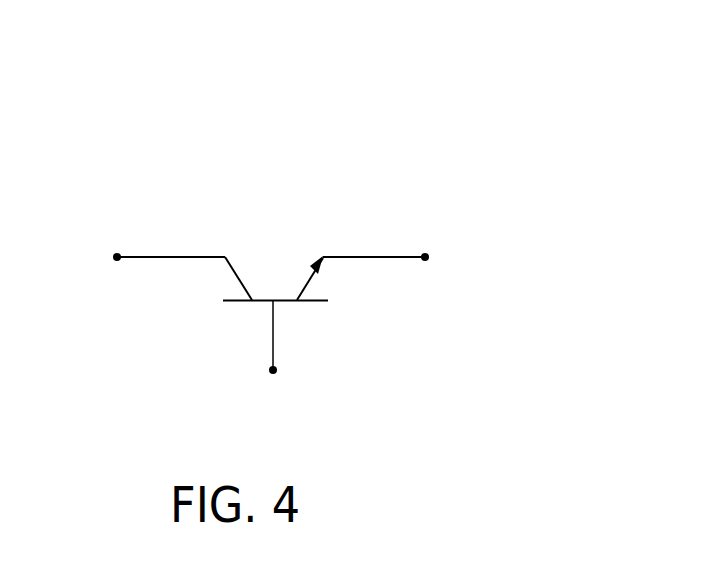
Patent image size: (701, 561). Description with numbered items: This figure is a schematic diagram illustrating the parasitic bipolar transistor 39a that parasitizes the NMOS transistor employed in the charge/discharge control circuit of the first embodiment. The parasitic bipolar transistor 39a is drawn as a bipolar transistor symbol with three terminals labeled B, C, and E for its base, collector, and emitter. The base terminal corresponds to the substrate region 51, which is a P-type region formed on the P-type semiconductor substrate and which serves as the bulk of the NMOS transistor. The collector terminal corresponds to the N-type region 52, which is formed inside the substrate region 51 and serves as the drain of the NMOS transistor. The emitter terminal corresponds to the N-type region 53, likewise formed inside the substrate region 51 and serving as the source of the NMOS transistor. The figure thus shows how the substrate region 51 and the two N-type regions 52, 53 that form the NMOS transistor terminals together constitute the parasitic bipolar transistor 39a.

The parasitic bipolar transistor 39a is at (539, 152).
The substrate region 51 is at (278, 371).
The N-type region 52 is at (113, 252).
The N-type region 53 is at (428, 252).